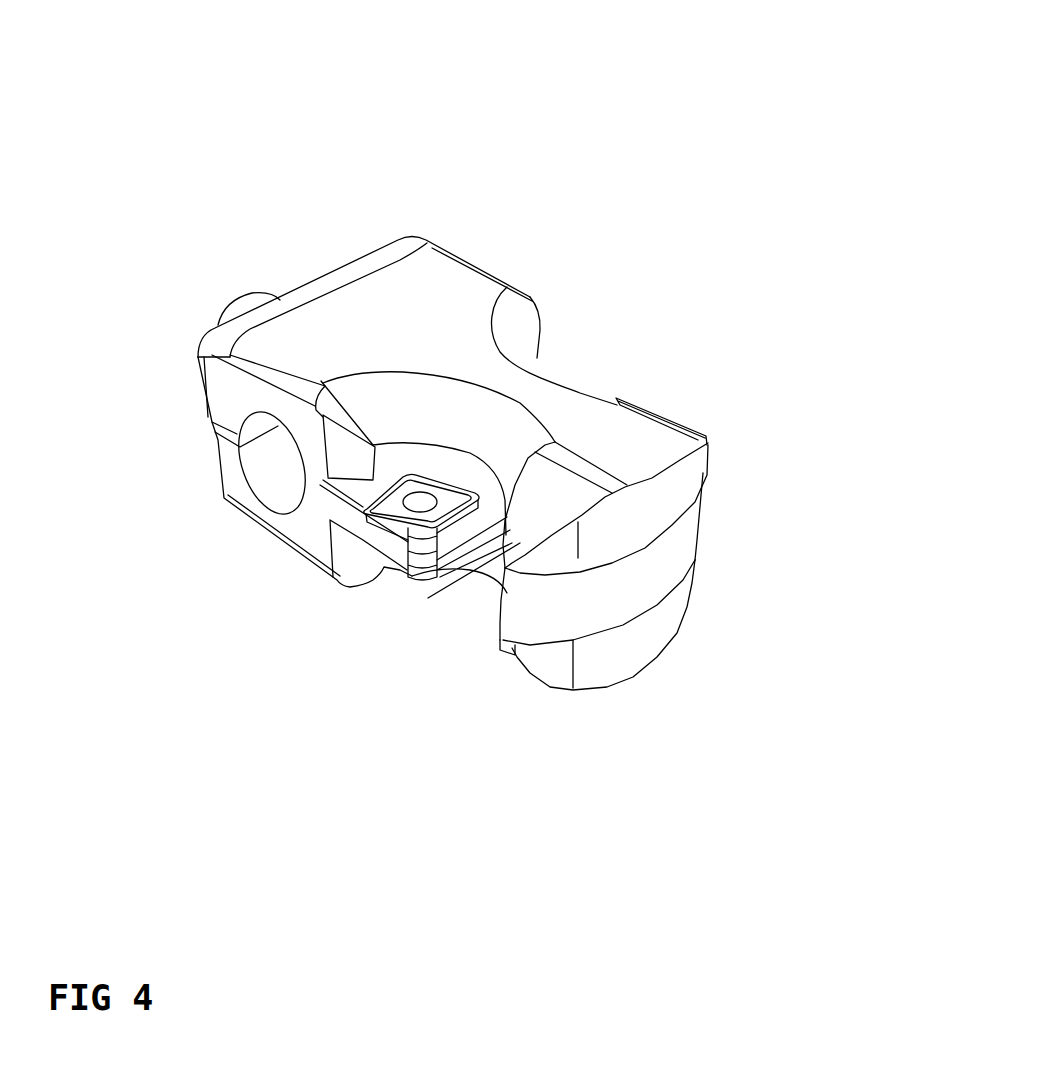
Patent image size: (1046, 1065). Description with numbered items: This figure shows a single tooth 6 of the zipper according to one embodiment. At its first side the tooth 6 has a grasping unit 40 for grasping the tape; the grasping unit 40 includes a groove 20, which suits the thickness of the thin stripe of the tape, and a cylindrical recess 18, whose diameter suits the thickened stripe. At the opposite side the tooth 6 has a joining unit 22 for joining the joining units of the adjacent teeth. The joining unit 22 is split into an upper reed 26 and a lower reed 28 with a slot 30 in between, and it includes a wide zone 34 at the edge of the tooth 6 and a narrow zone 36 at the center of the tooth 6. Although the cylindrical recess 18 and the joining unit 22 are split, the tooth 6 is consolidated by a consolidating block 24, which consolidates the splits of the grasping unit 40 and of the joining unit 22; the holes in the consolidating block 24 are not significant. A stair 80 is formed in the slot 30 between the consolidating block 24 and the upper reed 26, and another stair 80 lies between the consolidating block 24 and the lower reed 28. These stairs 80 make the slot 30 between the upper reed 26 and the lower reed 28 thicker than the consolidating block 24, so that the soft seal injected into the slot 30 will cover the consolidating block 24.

The tooth 6 is at (654, 93).
The cylindrical recess 18 is at (290, 463).
The groove 20 is at (215, 423).
The joining unit 22 is at (716, 318).
The consolidating block 24 is at (345, 547).
The upper reed 26 is at (672, 493).
The lower reed 28 is at (633, 630).
The slot 30 is at (627, 569).
The wide zone 34 is at (707, 407).
The narrow zone 36 is at (653, 335).
The grasping unit 40 is at (385, 328).
The stair 80 is at (491, 567).